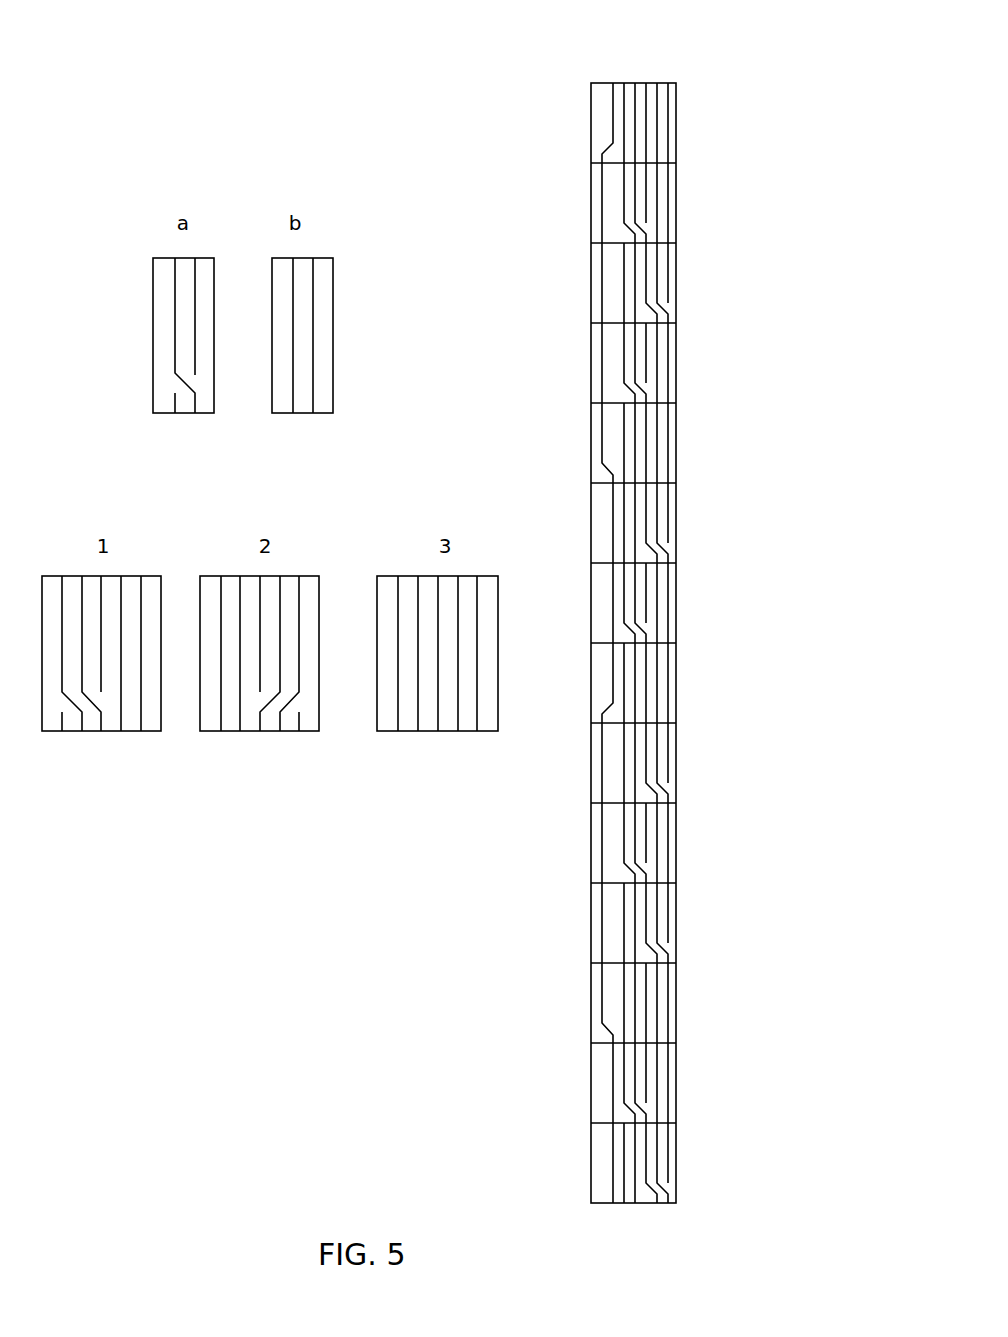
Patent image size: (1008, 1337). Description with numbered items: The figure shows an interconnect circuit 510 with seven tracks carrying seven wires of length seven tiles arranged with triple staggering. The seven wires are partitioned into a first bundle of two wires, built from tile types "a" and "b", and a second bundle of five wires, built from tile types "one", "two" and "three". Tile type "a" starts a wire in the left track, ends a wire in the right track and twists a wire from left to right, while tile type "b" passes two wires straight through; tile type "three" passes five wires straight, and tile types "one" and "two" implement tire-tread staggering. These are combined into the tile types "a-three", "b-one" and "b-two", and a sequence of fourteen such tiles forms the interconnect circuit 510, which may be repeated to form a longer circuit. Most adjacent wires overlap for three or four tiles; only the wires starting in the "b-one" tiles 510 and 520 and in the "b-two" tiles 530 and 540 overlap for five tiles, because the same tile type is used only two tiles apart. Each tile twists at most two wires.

The interconnect circuit 510 is at (572, 90).
The tile of tile type b1 520 is at (591, 393).
The tile of tile type b2 530 is at (591, 792).
The tile of tile type b2 540 is at (591, 949).